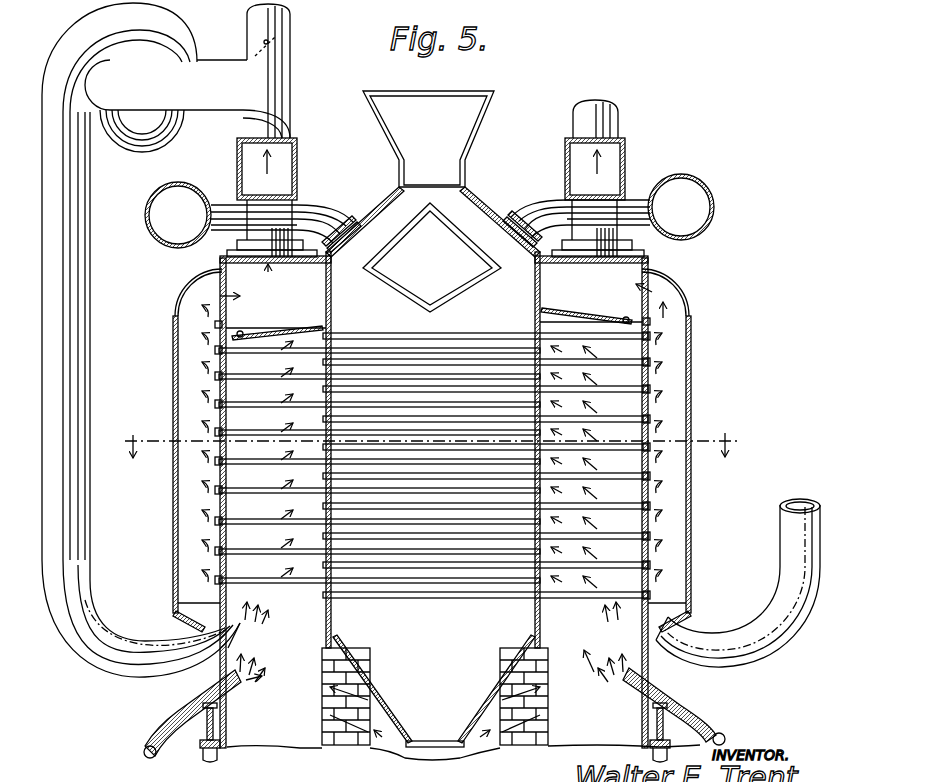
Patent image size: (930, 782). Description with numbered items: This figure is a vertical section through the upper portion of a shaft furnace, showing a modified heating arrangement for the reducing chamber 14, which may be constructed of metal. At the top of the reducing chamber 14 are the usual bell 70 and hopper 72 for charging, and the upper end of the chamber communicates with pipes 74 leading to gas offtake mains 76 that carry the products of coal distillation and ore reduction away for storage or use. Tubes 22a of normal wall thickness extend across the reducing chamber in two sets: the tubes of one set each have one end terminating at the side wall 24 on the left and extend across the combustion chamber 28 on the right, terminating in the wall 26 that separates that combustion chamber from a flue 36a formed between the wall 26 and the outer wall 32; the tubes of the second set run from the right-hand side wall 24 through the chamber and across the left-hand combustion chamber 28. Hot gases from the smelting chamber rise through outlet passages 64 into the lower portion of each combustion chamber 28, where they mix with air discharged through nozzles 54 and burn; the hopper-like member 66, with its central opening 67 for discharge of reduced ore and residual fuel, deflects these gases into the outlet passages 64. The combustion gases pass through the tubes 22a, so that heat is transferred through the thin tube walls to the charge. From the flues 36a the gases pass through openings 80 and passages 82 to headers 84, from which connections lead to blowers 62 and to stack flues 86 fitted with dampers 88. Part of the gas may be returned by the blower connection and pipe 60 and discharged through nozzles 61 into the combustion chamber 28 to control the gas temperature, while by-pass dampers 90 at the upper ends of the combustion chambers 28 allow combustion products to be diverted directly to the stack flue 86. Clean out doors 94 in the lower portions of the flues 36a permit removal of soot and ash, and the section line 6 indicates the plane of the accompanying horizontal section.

The section line 6- 6 is at (432, 428).
The reducing chamber 14 is at (541, 291).
The tubes 22a is at (728, 468).
The side walls 24 is at (300, 524).
The walls 26 is at (222, 359).
The combustion chamber and passage 28 is at (207, 678).
The walls 32 is at (173, 340).
The flue 36a is at (716, 367).
The nozzles 54 is at (236, 685).
The pipe 60 is at (75, 313).
The nozzles 61 is at (248, 627).
The blower 62 is at (172, 22).
The outlet passages 64 is at (324, 712).
The hopper-like member 66 is at (356, 675).
The central opening 67 is at (428, 742).
The bell 70 is at (432, 257).
The hopper 72 is at (428, 139).
The pipes 74 is at (330, 216).
The gas offtake mains 76 is at (180, 233).
The openings 80 is at (275, 262).
The passages 82 is at (240, 236).
The headers 84 is at (297, 163).
The stack flues 86 is at (291, 72).
The dampers 88 is at (272, 43).
The by-pass dampers 90 is at (268, 330).
The clean out doors 94 is at (187, 627).